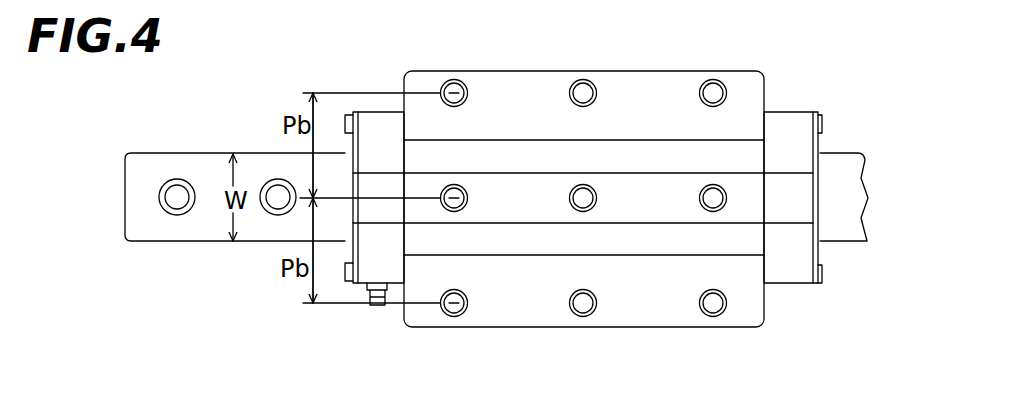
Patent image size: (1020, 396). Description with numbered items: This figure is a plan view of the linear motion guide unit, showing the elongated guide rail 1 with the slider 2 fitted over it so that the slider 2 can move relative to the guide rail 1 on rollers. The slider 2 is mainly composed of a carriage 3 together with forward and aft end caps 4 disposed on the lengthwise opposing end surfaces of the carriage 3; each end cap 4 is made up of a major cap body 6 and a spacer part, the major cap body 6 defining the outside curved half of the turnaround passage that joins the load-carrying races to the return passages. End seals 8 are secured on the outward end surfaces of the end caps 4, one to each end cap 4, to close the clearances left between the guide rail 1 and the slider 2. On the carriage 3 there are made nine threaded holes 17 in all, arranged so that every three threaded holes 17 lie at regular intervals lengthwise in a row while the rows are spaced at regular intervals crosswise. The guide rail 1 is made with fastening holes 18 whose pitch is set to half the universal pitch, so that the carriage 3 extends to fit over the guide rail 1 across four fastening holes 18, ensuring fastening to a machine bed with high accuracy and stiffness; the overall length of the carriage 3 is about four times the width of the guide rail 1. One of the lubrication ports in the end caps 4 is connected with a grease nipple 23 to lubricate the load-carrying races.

The guide rail 1 is at (496, 219).
The slider 2 is at (580, 197).
The carriage 3 is at (520, 122).
The end cap 4 is at (584, 163).
The major cap body 6 is at (377, 133).
The end seal 8 is at (350, 257).
The threaded hole 17 is at (583, 193).
The fastening hole 18 is at (177, 193).
The grease nipple 23 is at (377, 306).